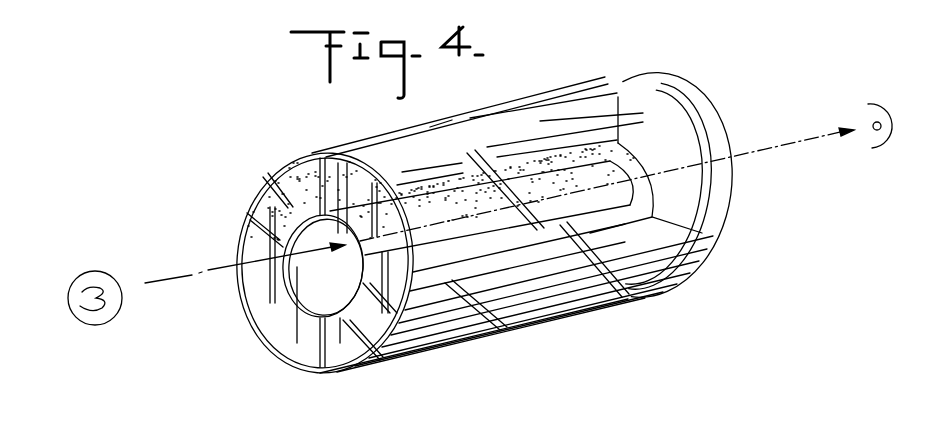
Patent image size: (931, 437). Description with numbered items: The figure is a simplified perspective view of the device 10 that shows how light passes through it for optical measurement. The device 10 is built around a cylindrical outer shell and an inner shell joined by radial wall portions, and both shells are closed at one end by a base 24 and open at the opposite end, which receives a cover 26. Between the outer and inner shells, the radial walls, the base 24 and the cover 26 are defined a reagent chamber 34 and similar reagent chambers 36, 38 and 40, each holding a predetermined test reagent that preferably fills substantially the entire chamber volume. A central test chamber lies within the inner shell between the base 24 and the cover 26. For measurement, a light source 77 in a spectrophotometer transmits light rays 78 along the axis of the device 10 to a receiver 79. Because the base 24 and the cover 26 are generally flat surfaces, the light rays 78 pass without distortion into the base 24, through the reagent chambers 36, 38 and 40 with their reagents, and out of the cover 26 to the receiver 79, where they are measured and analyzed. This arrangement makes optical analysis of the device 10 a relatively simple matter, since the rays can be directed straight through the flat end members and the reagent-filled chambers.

The device 10 is at (583, 73).
The base 24 is at (253, 317).
The cover 26 is at (667, 99).
The reagent chamber 34 is at (398, 287).
The reagent chamber 36 is at (340, 360).
The reagent chamber 38 is at (285, 329).
The reagent chamber 40 is at (292, 172).
The light source 77 is at (99, 272).
The light rays 78 is at (170, 276).
The receiver 79 is at (882, 100).